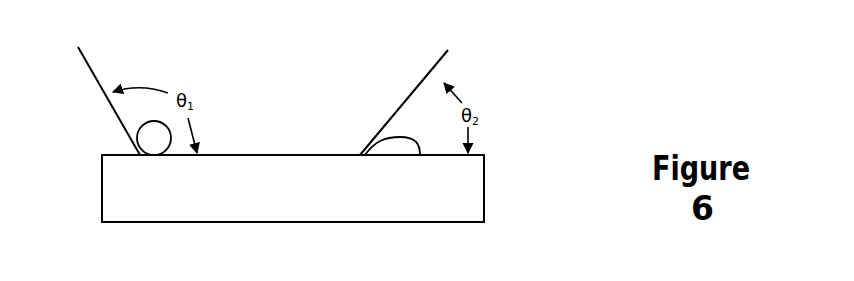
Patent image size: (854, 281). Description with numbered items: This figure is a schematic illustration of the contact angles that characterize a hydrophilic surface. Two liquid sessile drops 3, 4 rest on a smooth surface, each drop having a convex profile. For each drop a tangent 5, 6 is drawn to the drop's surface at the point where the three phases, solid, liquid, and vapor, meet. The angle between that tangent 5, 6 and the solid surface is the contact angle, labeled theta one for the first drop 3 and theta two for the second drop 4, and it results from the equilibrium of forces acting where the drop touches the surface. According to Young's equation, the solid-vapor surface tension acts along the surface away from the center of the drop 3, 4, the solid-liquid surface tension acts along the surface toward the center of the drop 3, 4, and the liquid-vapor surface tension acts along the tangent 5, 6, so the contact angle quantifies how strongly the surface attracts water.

The liquid sessile drop 3 is at (154, 138).
The liquid sessile drop 4 is at (392, 148).
The tangent 5 is at (88, 68).
The tangent 6 is at (433, 65).